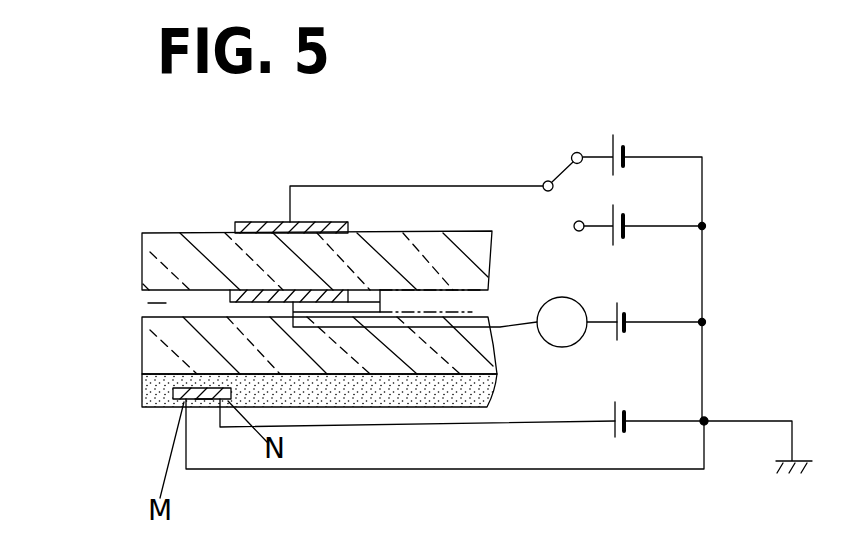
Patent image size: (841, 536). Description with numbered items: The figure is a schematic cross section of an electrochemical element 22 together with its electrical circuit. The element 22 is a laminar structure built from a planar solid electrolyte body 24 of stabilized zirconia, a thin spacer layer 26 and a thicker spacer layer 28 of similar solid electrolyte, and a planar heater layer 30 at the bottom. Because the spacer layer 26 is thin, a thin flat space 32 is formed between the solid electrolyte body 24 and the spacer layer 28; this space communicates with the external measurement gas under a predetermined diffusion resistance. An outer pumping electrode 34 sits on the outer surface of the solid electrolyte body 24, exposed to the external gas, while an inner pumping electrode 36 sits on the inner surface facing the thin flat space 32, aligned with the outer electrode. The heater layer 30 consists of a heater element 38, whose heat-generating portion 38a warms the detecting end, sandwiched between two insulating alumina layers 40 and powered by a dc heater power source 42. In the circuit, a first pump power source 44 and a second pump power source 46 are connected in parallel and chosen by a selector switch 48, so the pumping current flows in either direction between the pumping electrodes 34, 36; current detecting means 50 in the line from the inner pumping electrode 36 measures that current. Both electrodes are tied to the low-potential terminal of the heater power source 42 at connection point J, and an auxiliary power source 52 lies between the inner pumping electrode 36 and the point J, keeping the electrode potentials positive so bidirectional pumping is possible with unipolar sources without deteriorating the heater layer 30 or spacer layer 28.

The electrochemical element 22 is at (125, 188).
The solid electrolyte body 24 is at (160, 262).
The spacer layer 26 is at (465, 300).
The spacer layer 28 is at (160, 355).
The heater layer 30 is at (62, 408).
The thin flat space 32 is at (148, 303).
The outer pumping electrode 34 is at (268, 222).
The inner pumping electrode 36 is at (247, 290).
The heater element 38 is at (155, 405).
The heat-generating portion 38a is at (198, 402).
The electrically insulating ceramic layer 40 is at (145, 390).
The heater power source 42 is at (607, 436).
The first pump power source 44 is at (606, 121).
The second pump power source 46 is at (632, 243).
The selector switch 48 is at (545, 163).
The current detecting means 50 is at (546, 347).
The auxiliary power source 52 is at (612, 347).
The connection point J is at (707, 419).